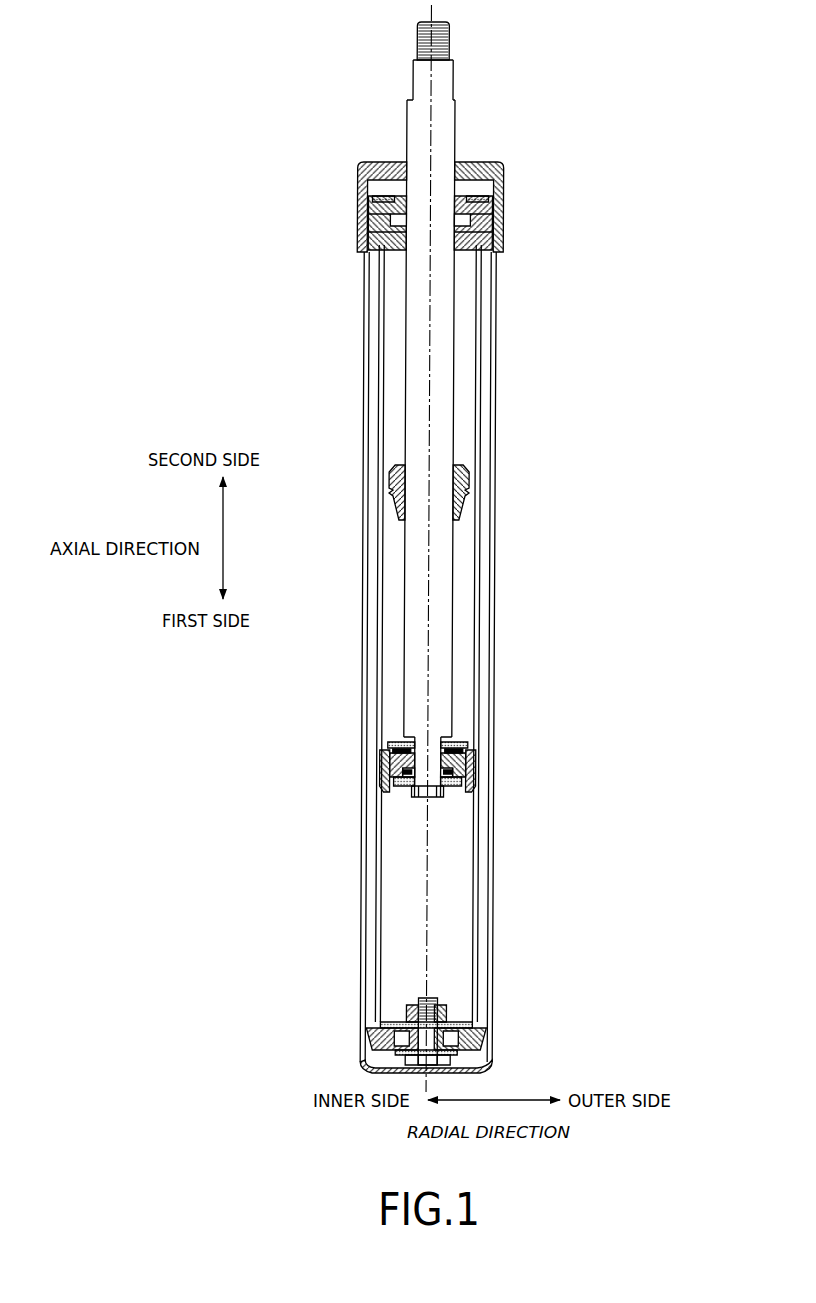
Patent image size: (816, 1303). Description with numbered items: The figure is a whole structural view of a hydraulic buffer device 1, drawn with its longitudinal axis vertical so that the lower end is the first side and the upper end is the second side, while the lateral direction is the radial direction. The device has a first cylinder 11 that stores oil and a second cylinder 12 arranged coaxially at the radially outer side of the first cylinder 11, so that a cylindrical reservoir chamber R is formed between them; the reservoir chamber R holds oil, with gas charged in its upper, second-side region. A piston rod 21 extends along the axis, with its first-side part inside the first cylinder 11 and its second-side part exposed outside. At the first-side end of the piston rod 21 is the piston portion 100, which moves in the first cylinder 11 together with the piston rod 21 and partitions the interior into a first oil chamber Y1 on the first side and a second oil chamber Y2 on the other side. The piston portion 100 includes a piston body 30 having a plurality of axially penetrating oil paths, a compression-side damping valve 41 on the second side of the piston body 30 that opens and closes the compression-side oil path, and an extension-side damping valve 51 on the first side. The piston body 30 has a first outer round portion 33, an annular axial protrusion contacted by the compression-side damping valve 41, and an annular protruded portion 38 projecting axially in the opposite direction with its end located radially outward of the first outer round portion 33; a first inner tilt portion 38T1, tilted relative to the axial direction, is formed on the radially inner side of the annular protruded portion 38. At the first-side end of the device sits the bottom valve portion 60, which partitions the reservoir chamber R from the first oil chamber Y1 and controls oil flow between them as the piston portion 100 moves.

The hydraulic buffer device 1 is at (398, 548).
The first cylinder 11 is at (481, 375).
The second cylinder 12 is at (497, 333).
The reservoir chamber R is at (487, 458).
The first oil chamber Y1 is at (465, 890).
The second oil chamber Y2 is at (463, 608).
The piston rod 21 is at (405, 547).
The piston portion 100 is at (404, 777).
The compression-side damping valve 41 is at (383, 740).
The piston body 30 is at (379, 768).
The extension-side damping valve 51 is at (395, 788).
The first outer round portion 33 is at (467, 745).
The annular protruded portion 38 is at (481, 783).
The first inner tilt portion 38T1 is at (462, 790).
The bottom valve portion 60 is at (459, 995).